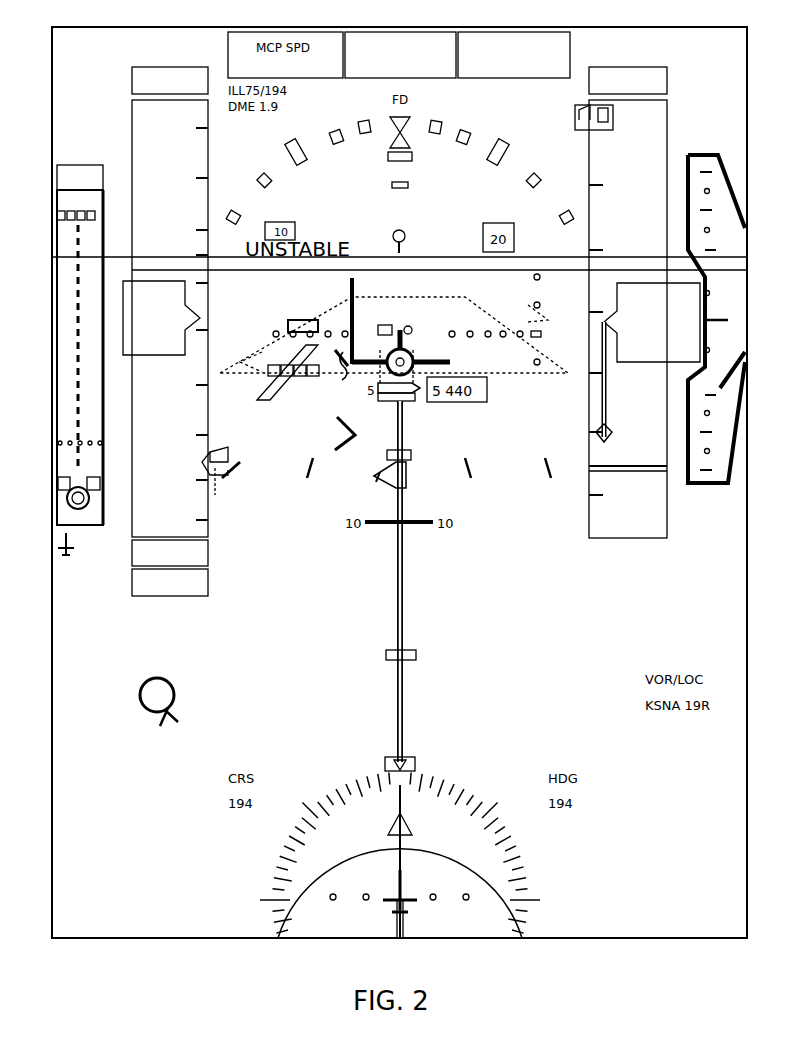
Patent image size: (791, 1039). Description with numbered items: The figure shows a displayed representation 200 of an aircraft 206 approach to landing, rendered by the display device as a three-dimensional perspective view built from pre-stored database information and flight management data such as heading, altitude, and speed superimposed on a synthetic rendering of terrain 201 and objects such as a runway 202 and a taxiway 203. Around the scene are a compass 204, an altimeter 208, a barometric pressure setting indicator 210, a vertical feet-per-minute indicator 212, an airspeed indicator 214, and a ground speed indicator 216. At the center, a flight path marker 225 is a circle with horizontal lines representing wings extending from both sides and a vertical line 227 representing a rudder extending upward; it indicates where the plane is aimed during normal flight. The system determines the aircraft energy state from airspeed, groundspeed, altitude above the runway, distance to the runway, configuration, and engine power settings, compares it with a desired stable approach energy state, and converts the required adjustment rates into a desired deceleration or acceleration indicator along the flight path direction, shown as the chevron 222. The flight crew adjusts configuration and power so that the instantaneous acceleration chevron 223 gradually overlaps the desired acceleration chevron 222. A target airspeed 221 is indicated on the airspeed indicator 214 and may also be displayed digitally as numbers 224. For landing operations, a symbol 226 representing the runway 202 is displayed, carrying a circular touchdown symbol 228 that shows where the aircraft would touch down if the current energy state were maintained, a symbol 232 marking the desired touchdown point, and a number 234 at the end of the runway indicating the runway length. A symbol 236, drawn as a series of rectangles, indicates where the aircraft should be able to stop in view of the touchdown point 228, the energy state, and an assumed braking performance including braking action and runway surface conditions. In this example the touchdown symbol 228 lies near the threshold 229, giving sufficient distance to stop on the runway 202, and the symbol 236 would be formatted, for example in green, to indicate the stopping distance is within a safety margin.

The displayed representation 200 is at (165, 841).
The terrain 201 is at (278, 672).
The runway 202 is at (410, 348).
The taxiway 203 is at (248, 370).
The compass 204 is at (460, 792).
The aircraft 206 is at (380, 478).
The altimeter 208 is at (667, 108).
The barometric pressure setting indicator 210 is at (602, 556).
The vertical feet-per-minute indicator 212 is at (712, 156).
The airspeed indicator 214 is at (132, 82).
The ground speed indicator 216 is at (208, 582).
The target airspeed 221 is at (217, 440).
The chevron 222 is at (337, 434).
The instantaneous acceleration chevron 223 is at (342, 380).
The numbers 224 is at (170, 66).
The flight path marker 225 is at (372, 350).
The symbol representing the runway 226 is at (106, 243).
The vertical line 227 is at (352, 280).
The touchdown symbol 228 is at (66, 500).
The threshold 229 is at (86, 545).
The desired touchdown point symbol 232 is at (104, 485).
The runway length number 234 is at (84, 167).
The stopping symbol 236 is at (104, 215).